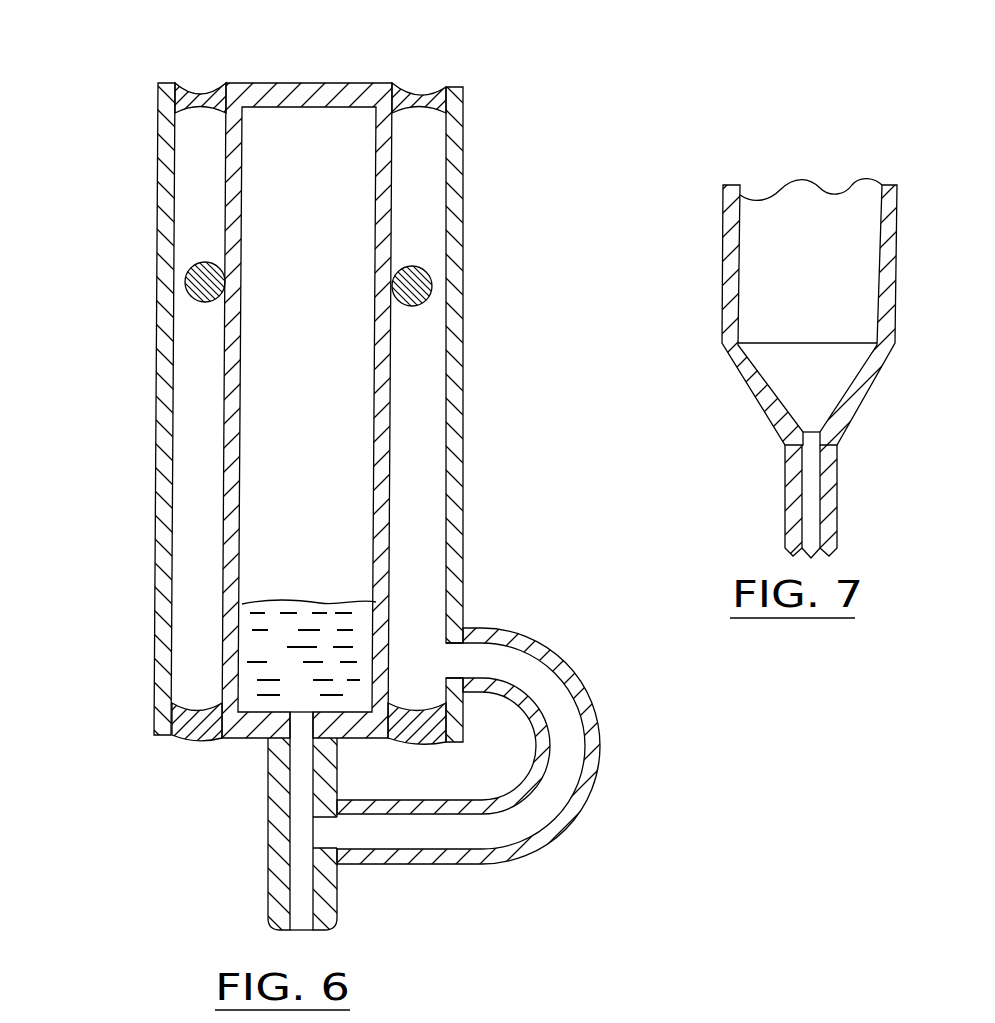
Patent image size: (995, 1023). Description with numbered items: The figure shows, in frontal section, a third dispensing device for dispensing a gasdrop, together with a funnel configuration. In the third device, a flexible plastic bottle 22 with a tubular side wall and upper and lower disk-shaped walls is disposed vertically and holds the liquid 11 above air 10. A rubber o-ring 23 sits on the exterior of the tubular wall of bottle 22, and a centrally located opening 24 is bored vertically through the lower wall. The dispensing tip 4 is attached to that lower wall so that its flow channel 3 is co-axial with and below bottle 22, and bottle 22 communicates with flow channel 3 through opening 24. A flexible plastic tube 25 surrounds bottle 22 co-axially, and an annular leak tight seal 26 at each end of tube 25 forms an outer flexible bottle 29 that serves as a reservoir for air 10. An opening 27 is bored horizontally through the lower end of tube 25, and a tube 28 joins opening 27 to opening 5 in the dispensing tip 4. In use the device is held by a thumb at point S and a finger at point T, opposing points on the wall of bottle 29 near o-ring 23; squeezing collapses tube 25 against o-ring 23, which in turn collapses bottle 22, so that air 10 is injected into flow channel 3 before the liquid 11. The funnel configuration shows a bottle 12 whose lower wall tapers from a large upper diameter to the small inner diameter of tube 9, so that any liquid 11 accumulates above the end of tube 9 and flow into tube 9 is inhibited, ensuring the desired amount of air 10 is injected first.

In FIG. 6, the flow channel 3 is at (268, 887).
In FIG. 6, the dispensing tip 4 is at (268, 813).
In FIG. 6, the opening 5 is at (340, 832).
In FIG. 7, the tube 9 is at (783, 493).
In FIG. 6, the air 10 is at (288, 192).
In FIG. 6, the liquid 11 is at (320, 613).
In FIG. 7, the bottle 12 is at (723, 205).
In FIG. 6, the flexible plastic bottle 22 is at (225, 418).
In FIG. 6, the rubber o-ring 23 is at (410, 267).
In FIG. 6, the opening 24 is at (303, 707).
In FIG. 6, the flexible plastic tube 25 is at (310, 412).
In FIG. 6, the annular leak tight seal 26 is at (413, 97).
In FIG. 6, the opening 27 is at (442, 660).
In FIG. 6, the tube 28 is at (575, 830).
In FIG. 6, the flexible bottle 29 is at (462, 430).
In FIG. 6, the point S is at (157, 278).
In FIG. 6, the point T is at (463, 283).